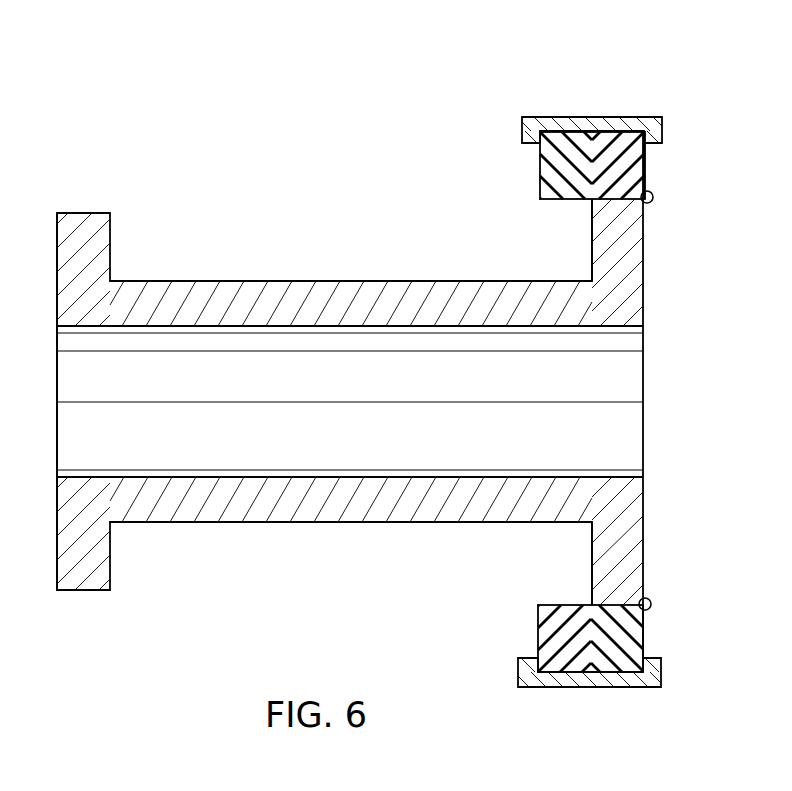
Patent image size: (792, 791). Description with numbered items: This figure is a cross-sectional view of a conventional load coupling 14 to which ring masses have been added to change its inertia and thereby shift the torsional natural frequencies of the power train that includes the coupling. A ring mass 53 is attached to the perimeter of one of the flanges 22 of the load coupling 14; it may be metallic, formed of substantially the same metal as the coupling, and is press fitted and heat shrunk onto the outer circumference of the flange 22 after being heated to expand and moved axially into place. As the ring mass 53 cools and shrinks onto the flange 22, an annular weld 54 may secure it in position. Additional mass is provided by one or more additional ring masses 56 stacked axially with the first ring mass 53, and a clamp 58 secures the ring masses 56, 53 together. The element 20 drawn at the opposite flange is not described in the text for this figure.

The tubular body 14 is at (284, 260).
The flange 20 is at (80, 592).
The side wall 22 is at (645, 270).
The outer edge 53 is at (633, 125).
The O-ring seal 54 is at (653, 196).
The seal block 56 is at (550, 127).
The end plate 58 is at (590, 118).